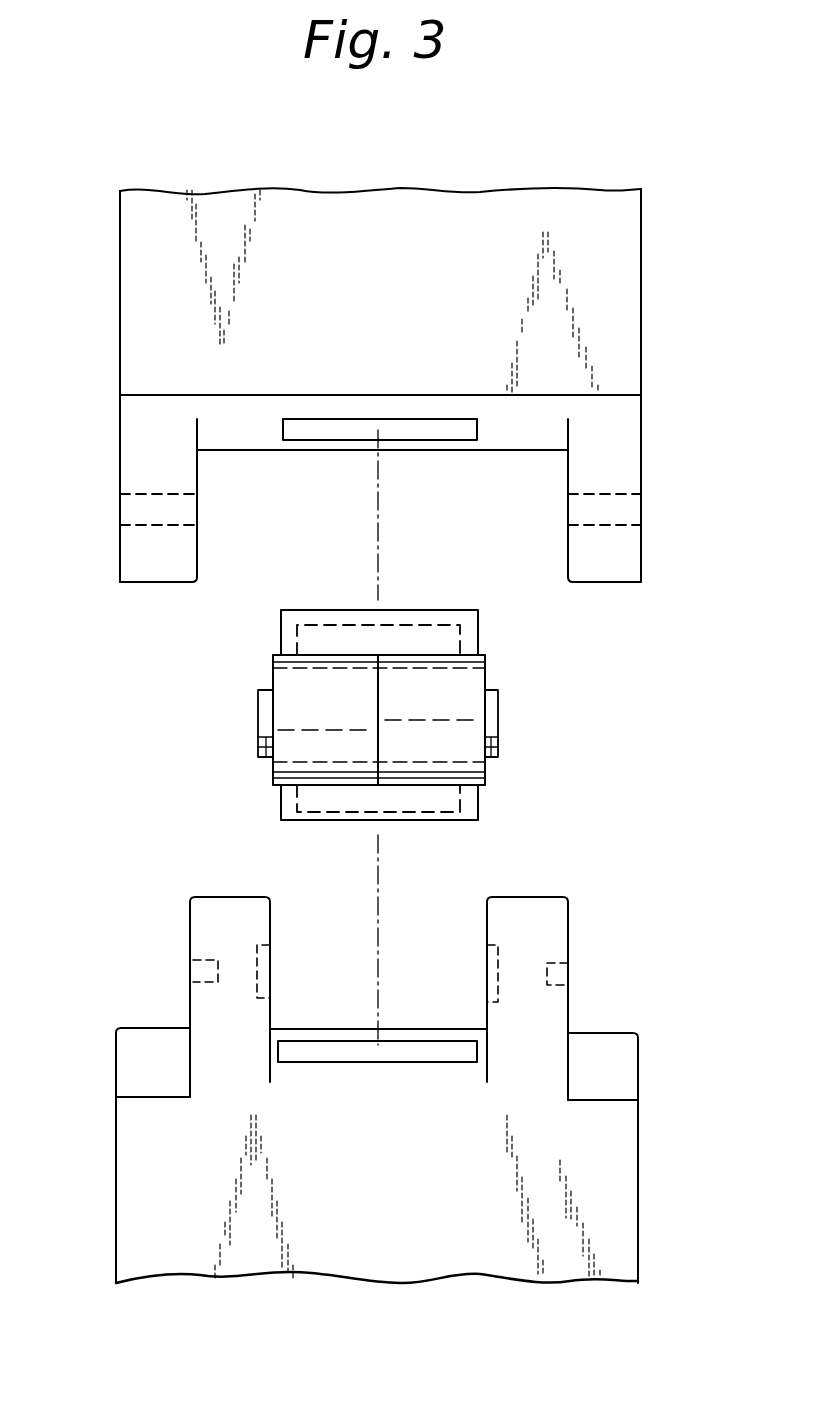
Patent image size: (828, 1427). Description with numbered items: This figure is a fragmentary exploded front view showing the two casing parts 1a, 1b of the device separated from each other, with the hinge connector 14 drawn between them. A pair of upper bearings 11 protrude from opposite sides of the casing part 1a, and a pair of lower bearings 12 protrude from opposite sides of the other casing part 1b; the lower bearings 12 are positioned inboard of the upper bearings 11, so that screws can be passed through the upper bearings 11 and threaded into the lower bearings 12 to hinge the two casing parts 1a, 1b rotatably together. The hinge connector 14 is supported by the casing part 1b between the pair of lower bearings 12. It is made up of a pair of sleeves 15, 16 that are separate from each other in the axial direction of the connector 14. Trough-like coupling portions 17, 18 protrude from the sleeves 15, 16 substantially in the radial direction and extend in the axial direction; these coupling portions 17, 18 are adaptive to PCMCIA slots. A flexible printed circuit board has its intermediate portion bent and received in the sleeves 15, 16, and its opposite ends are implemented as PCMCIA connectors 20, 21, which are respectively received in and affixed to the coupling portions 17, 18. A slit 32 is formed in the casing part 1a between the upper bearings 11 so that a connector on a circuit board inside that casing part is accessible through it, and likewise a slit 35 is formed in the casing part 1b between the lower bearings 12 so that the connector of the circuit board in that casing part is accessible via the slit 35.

The casing part 1a is at (155, 268).
The casing part 1b is at (145, 1203).
The upper bearings 11 is at (135, 465).
The lower bearings 12 is at (212, 924).
The hinge connector 14 is at (407, 702).
The sleeve 15 is at (290, 713).
The sleeve 16 is at (470, 730).
The coupling portion 17 is at (317, 805).
The coupling portion 18 is at (452, 642).
The PCMCIA connector 20 is at (400, 630).
The PCMCIA connector 21 is at (430, 806).
The slit 32 is at (442, 428).
The slit 35 is at (435, 1050).